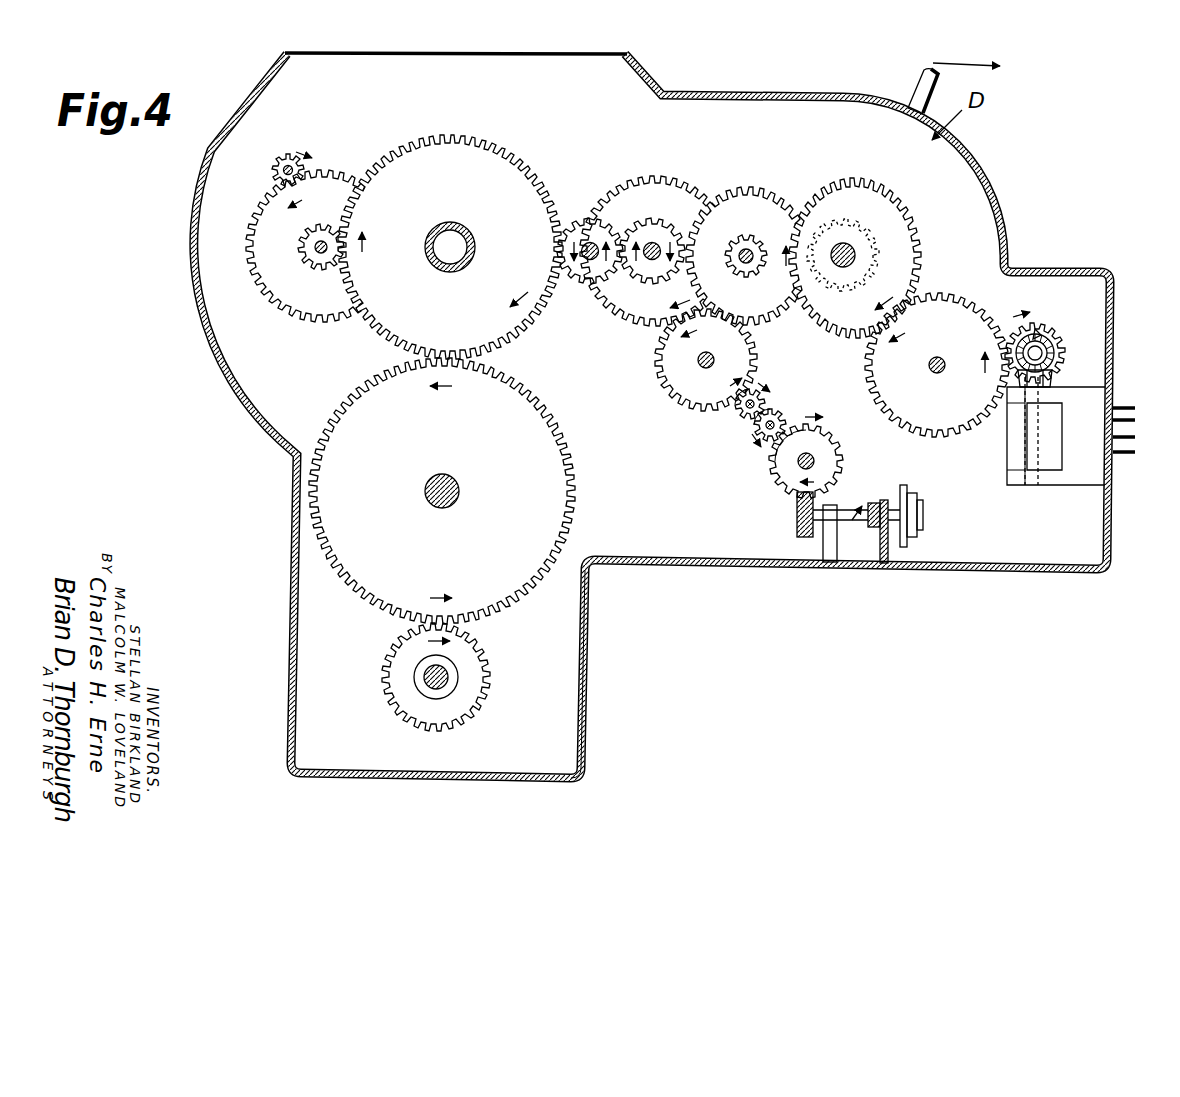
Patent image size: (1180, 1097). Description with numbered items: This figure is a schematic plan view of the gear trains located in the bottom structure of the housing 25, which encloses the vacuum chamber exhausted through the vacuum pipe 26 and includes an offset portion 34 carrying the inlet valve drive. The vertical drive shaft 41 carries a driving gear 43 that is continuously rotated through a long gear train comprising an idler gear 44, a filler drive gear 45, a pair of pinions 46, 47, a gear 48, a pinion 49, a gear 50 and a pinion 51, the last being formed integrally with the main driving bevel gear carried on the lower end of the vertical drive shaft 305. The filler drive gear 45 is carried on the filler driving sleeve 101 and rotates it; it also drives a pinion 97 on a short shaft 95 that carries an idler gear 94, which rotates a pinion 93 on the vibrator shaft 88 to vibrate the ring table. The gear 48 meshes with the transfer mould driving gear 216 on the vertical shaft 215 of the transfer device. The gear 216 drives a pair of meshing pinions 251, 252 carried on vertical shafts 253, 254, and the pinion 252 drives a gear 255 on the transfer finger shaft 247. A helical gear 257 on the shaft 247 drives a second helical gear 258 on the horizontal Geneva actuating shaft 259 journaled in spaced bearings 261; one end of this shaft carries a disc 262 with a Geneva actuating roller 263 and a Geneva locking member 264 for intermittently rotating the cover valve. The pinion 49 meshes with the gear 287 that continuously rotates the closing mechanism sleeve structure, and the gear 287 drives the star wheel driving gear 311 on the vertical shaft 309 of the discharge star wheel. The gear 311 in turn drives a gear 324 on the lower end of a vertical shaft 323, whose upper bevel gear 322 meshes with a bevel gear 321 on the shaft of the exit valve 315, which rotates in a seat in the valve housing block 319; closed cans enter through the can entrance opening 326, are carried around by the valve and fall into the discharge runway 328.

The housing 25 is at (983, 165).
The vacuum pipe 26 is at (918, 88).
The offset portion 34 is at (588, 675).
The vertical drive shaft 41 is at (449, 674).
The driving gear 43 is at (470, 696).
The idler gear 44 is at (557, 433).
The filler drive gear 45 is at (378, 320).
The pinion 46 is at (577, 230).
The pinion 47 is at (648, 232).
The gear 48 is at (678, 200).
The pinion 49 is at (748, 247).
The gear 50 is at (760, 196).
The pinion 51 is at (860, 230).
The vibrator shaft 88 is at (288, 165).
The pinion 93 is at (278, 166).
The idler gear 94 is at (270, 228).
The short shaft 95 is at (314, 247).
The pinion 97 is at (311, 266).
The filler driving sleeve 101 is at (471, 242).
The vertical shaft 215 is at (713, 359).
The transfer mould driving gear 216 is at (662, 373).
The transfer finger shaft 247 is at (790, 462).
The pinion 251 is at (740, 411).
The pinion 252 is at (754, 433).
The vertical shaft 253 is at (760, 400).
The vertical shaft 254 is at (776, 420).
The gear 255 is at (822, 440).
The helical gear 257 is at (816, 462).
The second helical gear 258 is at (797, 520).
The Geneva actuating shaft 259 is at (840, 530).
The bearings 261 is at (876, 504).
The disc 262 is at (908, 540).
The Geneva actuating roller 263 is at (908, 500).
The Geneva locking member 264 is at (917, 520).
The gear 287 is at (890, 215).
The vertical drive shaft 305 is at (856, 255).
The vertical shaft 309 is at (933, 370).
The star wheel driving gear 311 is at (936, 310).
The exit valve 315 is at (1052, 425).
The valve housing block 319 is at (1080, 472).
The bevel gear 321 is at (1052, 374).
The bevel gear 322 is at (1050, 338).
The vertical shaft 323 is at (1056, 352).
The gear 324 is at (1045, 331).
The can entrance opening 326 is at (1016, 462).
The discharge runway 328 is at (1128, 406).